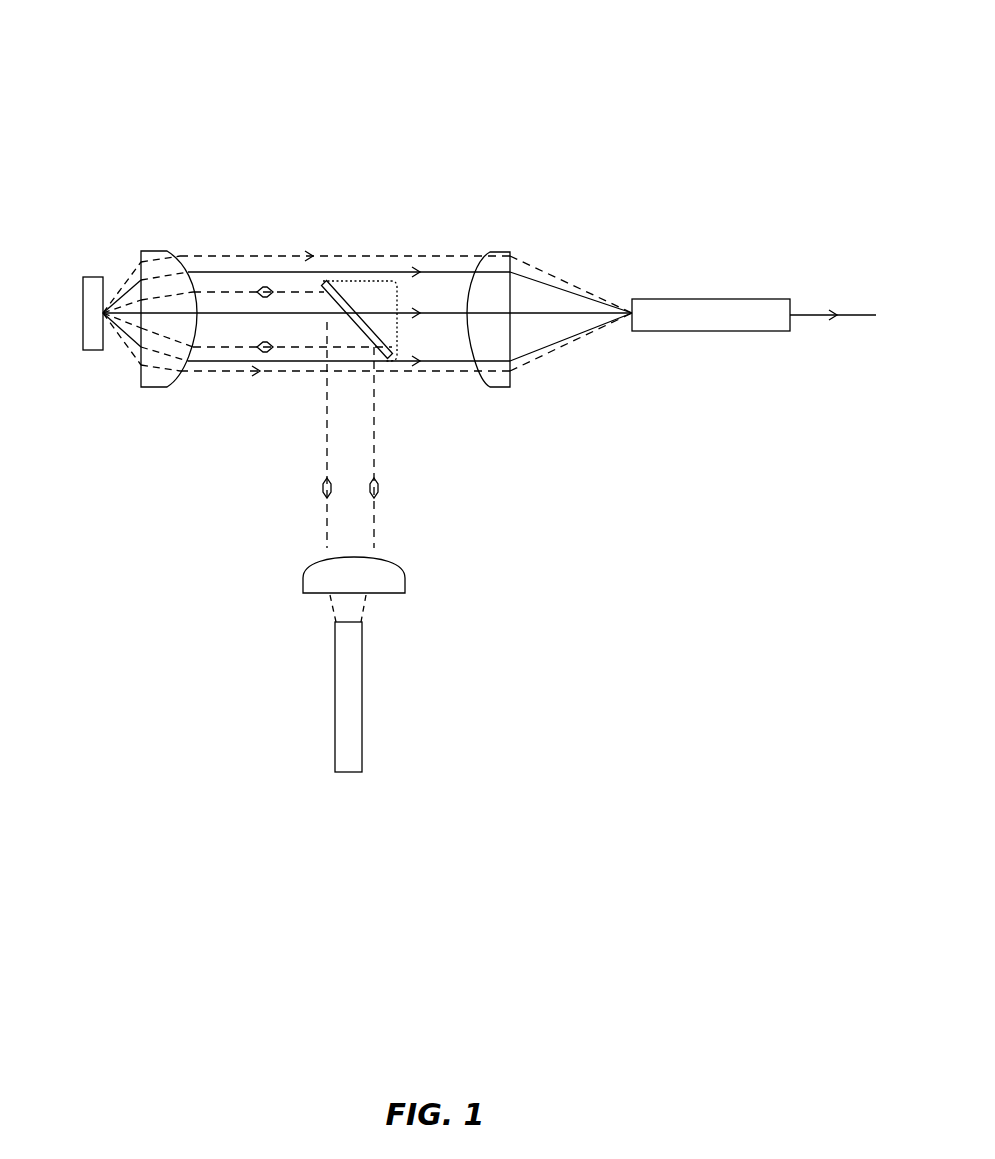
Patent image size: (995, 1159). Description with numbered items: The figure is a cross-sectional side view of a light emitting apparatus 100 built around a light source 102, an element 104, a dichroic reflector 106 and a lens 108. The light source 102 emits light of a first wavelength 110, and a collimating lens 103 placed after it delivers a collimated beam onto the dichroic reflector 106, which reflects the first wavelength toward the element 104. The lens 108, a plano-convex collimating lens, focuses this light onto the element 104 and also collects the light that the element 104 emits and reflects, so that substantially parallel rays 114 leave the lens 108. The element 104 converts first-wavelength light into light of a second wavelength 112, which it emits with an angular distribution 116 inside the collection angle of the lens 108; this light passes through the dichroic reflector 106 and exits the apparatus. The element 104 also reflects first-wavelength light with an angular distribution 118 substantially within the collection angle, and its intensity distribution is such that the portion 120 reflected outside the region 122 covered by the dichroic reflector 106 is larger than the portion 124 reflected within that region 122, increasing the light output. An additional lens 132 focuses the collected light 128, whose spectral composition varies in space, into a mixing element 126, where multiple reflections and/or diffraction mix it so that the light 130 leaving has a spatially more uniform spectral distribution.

The light emitting apparatus 100 is at (173, 127).
The light source 102 is at (362, 655).
The collimating lens 103 is at (405, 585).
The element 104 is at (82, 277).
The dichroic reflector 106 is at (390, 360).
The lens 108 is at (152, 250).
The light of the first wavelength 110 is at (374, 512).
The light of the second wavelength 112 is at (224, 257).
The substantially parallel rays 114 is at (355, 245).
The angular distribution 116 is at (130, 305).
The angular distribution 118 is at (122, 330).
The portion 120 is at (198, 373).
The region 122 is at (397, 320).
The portion 124 is at (243, 347).
The mixing element 126 is at (683, 332).
The light entering the mixing element 128 is at (578, 270).
The light leaving the mixing element 130 is at (805, 308).
The additional lens 132 is at (510, 387).